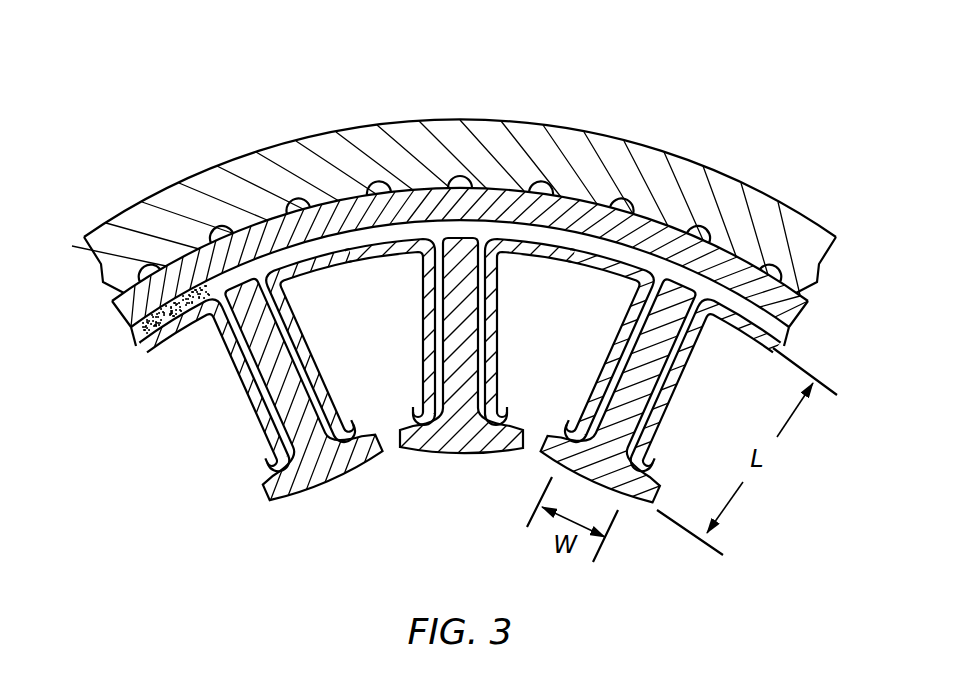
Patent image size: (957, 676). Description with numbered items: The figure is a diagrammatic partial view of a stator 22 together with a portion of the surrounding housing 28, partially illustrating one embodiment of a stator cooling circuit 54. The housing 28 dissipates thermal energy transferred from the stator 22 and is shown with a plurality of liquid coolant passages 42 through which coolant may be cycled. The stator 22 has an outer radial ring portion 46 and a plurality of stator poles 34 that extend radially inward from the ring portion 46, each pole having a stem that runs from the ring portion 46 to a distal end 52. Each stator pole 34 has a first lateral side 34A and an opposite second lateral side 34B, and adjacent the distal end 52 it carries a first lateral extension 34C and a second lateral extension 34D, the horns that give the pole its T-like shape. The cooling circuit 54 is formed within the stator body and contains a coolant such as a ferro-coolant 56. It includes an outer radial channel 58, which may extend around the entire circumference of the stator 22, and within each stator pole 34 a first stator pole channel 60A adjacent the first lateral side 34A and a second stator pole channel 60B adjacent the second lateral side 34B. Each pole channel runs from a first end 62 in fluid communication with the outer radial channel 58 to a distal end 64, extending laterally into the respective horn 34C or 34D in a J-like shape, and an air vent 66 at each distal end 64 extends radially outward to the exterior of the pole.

The stator 22 is at (798, 308).
The housing 28 is at (720, 170).
The stator pole 34 is at (227, 432).
The first lateral side 34A is at (247, 362).
The second lateral side 34B is at (298, 320).
The first lateral extension 34C is at (270, 497).
The second lateral extension 34D is at (372, 455).
The liquid coolant passages 42 is at (623, 190).
The outer radial ring portion 46 is at (397, 203).
The distal end 52 is at (317, 478).
The stator cooling circuit 54 is at (118, 332).
The ferro-coolant 56 is at (203, 273).
The outer radial channel 58 is at (320, 247).
The first stator pole channel 60A is at (243, 390).
The second stator pole channel 60B is at (308, 358).
The first end 62 is at (212, 330).
The distal end 64 is at (280, 480).
The air vent 66 is at (275, 470).